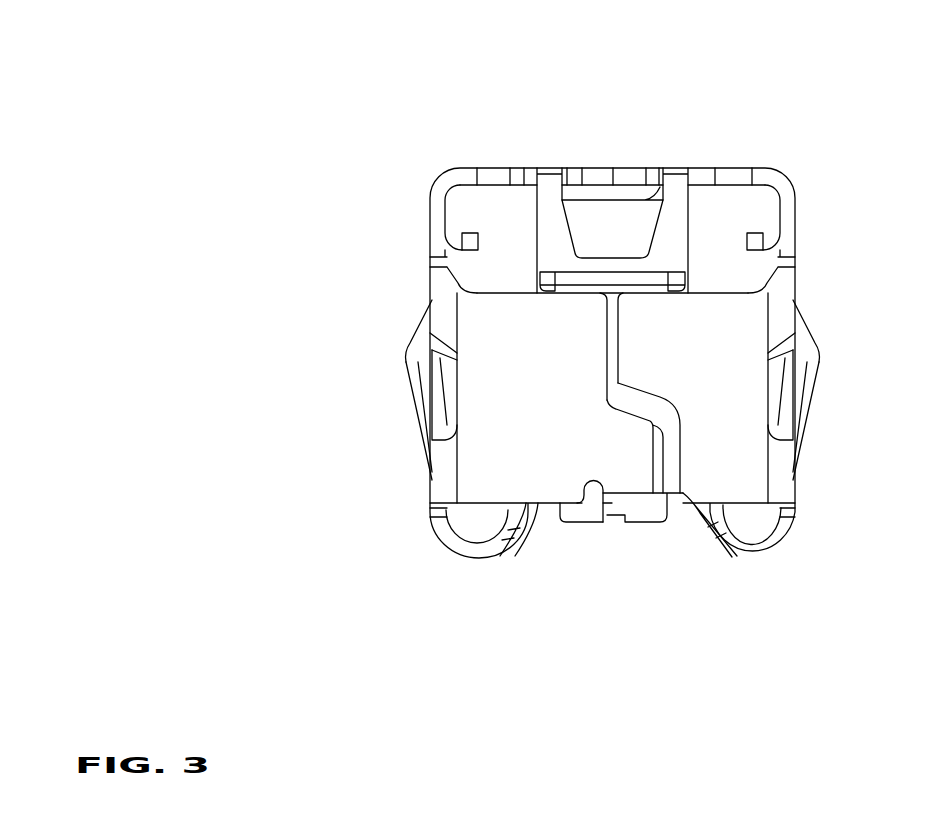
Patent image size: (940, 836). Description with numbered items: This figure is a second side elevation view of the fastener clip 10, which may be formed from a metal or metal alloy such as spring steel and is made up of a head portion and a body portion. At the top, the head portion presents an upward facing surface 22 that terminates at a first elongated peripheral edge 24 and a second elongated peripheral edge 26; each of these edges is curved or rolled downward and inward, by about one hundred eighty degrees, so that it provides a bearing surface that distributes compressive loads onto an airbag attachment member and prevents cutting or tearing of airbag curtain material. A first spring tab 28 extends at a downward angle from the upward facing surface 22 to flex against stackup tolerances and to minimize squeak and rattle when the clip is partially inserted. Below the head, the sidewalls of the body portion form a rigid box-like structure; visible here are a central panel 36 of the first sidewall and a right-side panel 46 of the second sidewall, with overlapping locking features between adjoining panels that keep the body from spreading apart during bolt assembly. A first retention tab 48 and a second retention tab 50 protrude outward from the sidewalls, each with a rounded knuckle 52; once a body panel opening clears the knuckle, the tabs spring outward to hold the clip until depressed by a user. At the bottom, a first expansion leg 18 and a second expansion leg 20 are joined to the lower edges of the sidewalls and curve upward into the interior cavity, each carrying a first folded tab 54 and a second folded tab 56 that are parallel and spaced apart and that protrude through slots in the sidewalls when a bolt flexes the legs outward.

The fastener clip 10 is at (777, 100).
The first expansion leg 18 is at (757, 558).
The second expansion leg 20 is at (470, 560).
The upward facing surface 22 is at (500, 168).
The first elongated peripheral edge 24 is at (797, 188).
The second elongated peripheral edge 26 is at (440, 190).
The first spring tab 28 is at (672, 253).
The central panel 36 is at (706, 368).
The right-side panel 46 is at (545, 388).
The first retention tab 48 is at (818, 380).
The second retention tab 50 is at (413, 397).
The rounded knuckle 52 is at (410, 348).
The first folded tab 54 is at (778, 397).
The second folded tab 56 is at (447, 393).